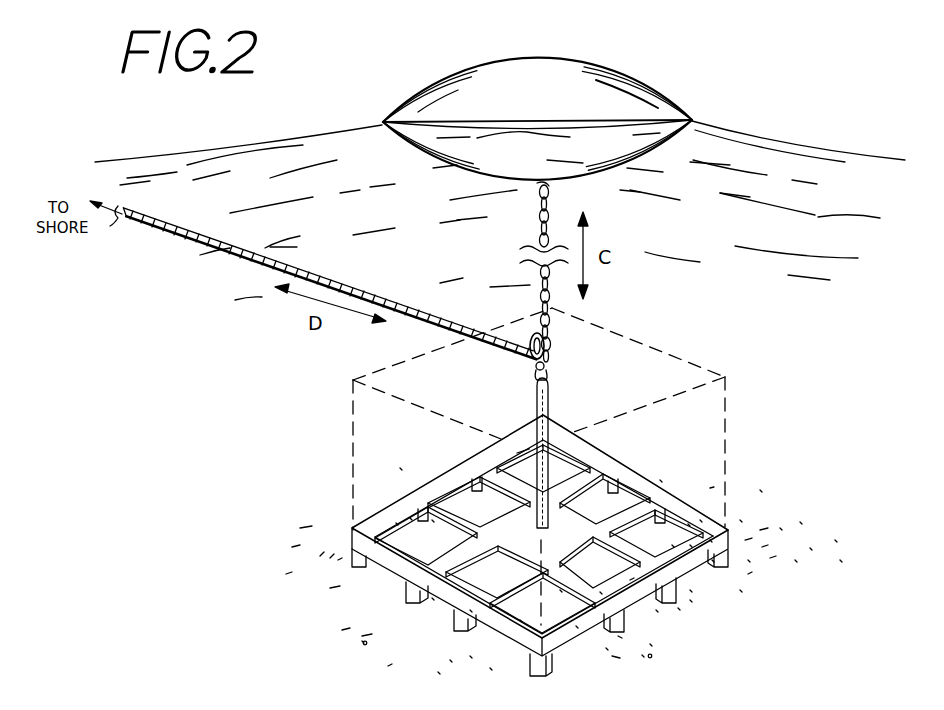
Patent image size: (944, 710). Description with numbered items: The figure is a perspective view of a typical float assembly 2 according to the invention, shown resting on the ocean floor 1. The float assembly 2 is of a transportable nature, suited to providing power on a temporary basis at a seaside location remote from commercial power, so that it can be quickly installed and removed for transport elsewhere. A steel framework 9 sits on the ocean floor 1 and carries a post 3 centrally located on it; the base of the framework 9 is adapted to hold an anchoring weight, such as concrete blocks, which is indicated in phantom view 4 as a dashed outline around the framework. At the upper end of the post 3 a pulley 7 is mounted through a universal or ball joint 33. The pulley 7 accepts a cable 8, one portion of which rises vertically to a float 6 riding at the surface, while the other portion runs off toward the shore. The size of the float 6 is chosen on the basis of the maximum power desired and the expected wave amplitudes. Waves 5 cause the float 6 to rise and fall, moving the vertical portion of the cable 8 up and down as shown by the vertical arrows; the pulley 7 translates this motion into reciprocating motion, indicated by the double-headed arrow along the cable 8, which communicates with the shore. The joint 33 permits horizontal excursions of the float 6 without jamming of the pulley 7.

The ocean floor 1 is at (402, 655).
The float assembly 2 is at (208, 469).
The post 3 is at (549, 413).
The phantom view 4 is at (726, 412).
The waves 5 is at (270, 147).
The float 6 is at (689, 113).
The pulley 7 is at (532, 337).
The cable 8 is at (180, 239).
The steel framework 9 is at (352, 540).
The universal or ball joint 33 is at (548, 372).